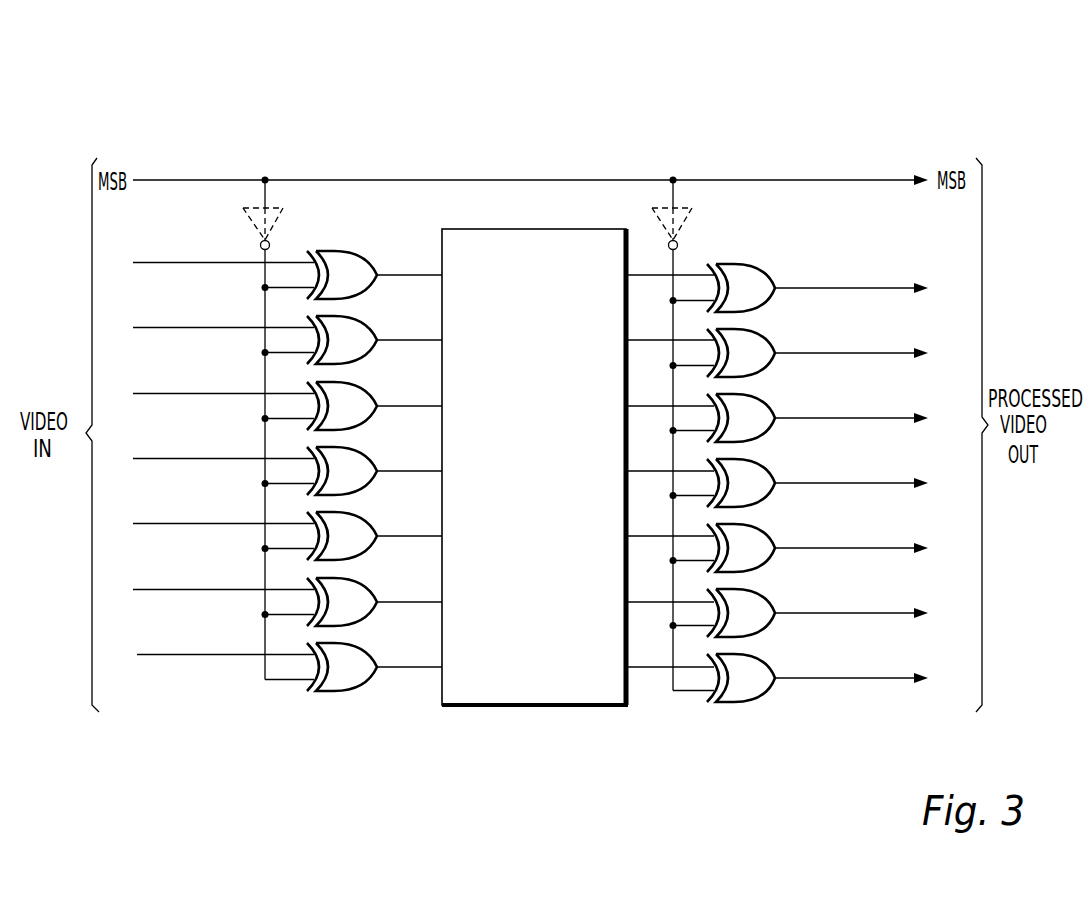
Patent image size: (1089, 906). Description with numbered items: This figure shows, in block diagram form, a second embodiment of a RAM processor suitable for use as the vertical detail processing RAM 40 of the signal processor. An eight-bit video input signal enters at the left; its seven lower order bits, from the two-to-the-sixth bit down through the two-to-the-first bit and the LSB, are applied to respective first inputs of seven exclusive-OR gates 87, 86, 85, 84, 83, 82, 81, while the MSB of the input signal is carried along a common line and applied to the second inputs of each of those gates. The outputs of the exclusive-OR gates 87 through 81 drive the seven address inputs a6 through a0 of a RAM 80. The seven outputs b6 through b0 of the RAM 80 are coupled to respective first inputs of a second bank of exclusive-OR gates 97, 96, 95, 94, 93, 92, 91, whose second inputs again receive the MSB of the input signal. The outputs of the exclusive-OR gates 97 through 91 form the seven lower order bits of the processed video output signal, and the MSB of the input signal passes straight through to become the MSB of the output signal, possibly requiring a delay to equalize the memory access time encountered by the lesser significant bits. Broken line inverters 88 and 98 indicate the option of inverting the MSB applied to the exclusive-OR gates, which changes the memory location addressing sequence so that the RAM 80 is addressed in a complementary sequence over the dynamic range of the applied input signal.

The vertical detail processing RAM 40 is at (535, 447).
The RAM 80 is at (476, 229).
The exclusive-OR gate 81 is at (271, 666).
The exclusive-OR gate 82 is at (275, 598).
The exclusive-OR gate 83 is at (275, 532).
The exclusive-OR gate 84 is at (275, 467).
The exclusive-OR gate 85 is at (275, 402).
The exclusive-OR gate 86 is at (275, 336).
The exclusive-OR gate 87 is at (275, 271).
The inverter 88 is at (278, 216).
The exclusive-OR gate 91 is at (797, 678).
The exclusive-OR gate 92 is at (792, 613).
The exclusive-OR gate 93 is at (792, 548).
The exclusive-OR gate 94 is at (792, 483).
The exclusive-OR gate 95 is at (792, 418).
The exclusive-OR gate 96 is at (792, 353).
The exclusive-OR gate 97 is at (792, 288).
The inverter 98 is at (684, 214).